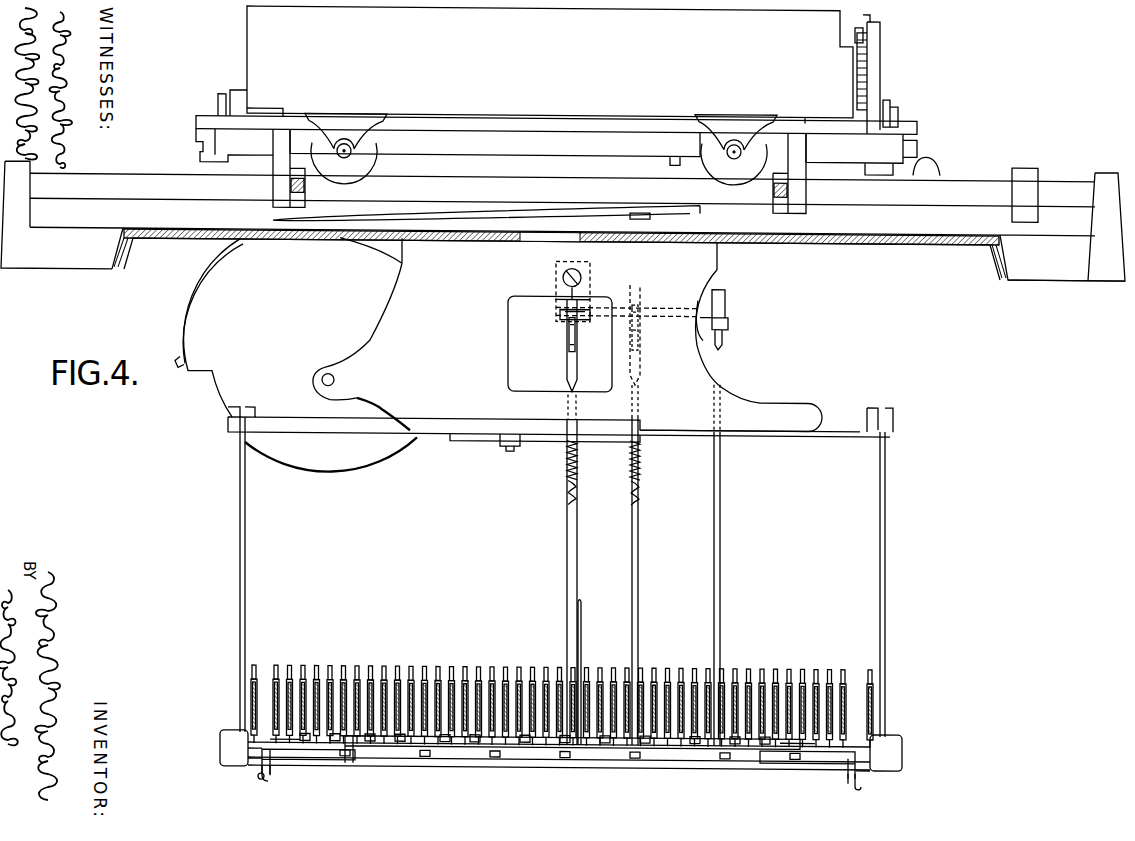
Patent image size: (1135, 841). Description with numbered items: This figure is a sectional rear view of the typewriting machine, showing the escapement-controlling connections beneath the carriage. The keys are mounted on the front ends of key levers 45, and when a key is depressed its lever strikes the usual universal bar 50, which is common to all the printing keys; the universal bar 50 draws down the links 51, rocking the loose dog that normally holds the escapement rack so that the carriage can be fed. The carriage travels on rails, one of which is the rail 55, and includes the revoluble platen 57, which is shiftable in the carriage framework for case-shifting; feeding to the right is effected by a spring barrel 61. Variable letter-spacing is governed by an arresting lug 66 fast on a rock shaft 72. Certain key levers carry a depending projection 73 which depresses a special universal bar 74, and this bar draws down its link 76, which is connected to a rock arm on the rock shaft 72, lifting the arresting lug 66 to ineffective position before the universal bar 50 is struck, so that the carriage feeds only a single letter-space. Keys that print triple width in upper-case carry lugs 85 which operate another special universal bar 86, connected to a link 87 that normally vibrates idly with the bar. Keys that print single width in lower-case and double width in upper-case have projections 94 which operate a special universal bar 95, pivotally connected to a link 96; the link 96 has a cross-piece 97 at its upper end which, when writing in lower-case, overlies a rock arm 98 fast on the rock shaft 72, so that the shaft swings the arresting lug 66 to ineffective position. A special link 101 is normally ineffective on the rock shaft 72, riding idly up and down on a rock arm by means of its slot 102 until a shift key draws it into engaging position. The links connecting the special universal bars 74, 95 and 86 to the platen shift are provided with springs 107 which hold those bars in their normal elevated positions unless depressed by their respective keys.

The key levers 45 is at (795, 645).
The universal bar 50 is at (222, 743).
The links 51 is at (886, 545).
The rail 55 is at (188, 175).
The revoluble platen 57 is at (853, 65).
The spring barrel 61 is at (296, 354).
The arresting lug 66 is at (565, 313).
The rock shaft 72 is at (663, 305).
The depending projection 73 is at (605, 755).
The special universal bar 74 is at (820, 766).
The link 76 is at (720, 517).
The lugs 85 is at (660, 743).
The special universal bar 86 is at (770, 757).
The link 87 is at (582, 632).
The projections 94 is at (538, 744).
The special universal bar 95 is at (700, 756).
The link 96 is at (577, 528).
The cross-piece 97 is at (582, 279).
The rock arm 98 is at (576, 337).
The special link 101 is at (638, 561).
The slot 102 is at (637, 327).
The springs 107 is at (630, 441).